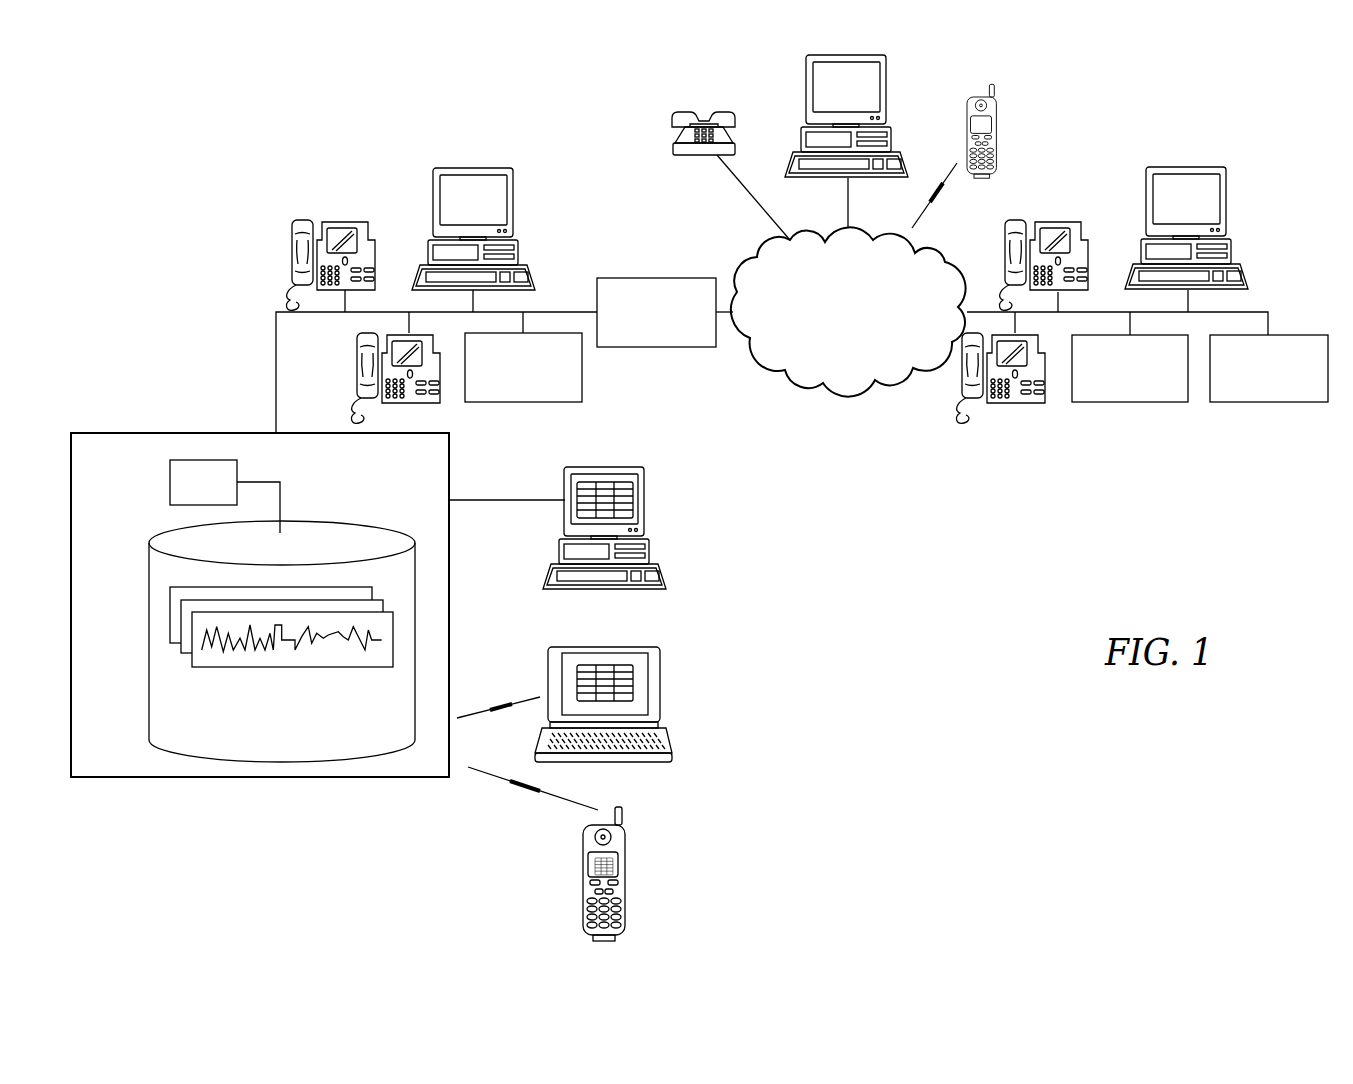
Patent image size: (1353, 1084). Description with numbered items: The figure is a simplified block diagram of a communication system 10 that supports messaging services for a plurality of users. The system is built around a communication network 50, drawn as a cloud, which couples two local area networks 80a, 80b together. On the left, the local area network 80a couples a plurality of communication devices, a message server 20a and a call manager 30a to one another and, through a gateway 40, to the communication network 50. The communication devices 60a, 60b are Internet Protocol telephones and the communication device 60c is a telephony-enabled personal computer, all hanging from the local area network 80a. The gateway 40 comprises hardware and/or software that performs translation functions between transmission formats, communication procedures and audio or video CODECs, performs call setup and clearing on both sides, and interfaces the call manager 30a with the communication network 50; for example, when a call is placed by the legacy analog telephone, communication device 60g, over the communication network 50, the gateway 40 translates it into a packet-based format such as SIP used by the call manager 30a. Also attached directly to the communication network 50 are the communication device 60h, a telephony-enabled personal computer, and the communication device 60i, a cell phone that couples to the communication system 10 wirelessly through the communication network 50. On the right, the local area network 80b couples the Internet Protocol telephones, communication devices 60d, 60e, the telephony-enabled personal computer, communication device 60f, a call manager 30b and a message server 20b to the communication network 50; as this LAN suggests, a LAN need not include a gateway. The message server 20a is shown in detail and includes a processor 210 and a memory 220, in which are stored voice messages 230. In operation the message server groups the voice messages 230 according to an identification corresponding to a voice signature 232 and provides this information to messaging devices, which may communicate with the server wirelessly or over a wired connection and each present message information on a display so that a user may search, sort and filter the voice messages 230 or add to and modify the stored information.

The communication system 10 is at (704, 497).
The message server 20a is at (318, 572).
The message server 20b is at (1277, 403).
The call manager 30a is at (582, 367).
The call manager 30b is at (1140, 403).
The gateway 40 is at (658, 277).
The communication network 50 is at (947, 253).
The communication device 60a is at (327, 220).
The communication device 60b is at (357, 367).
The communication device 60c is at (467, 167).
The communication device 60d is at (1058, 220).
The communication device 60e is at (1015, 405).
The communication device 60f is at (1193, 165).
The communication device 60g is at (697, 110).
The communication device 60h is at (892, 90).
The communication device 60i is at (993, 135).
The local area network 80a is at (275, 332).
The local area network 80b is at (1270, 318).
The processor 210 is at (170, 473).
The memory 220 is at (363, 523).
The voice messages 230 is at (281, 661).
The voice signature 232 is at (342, 638).